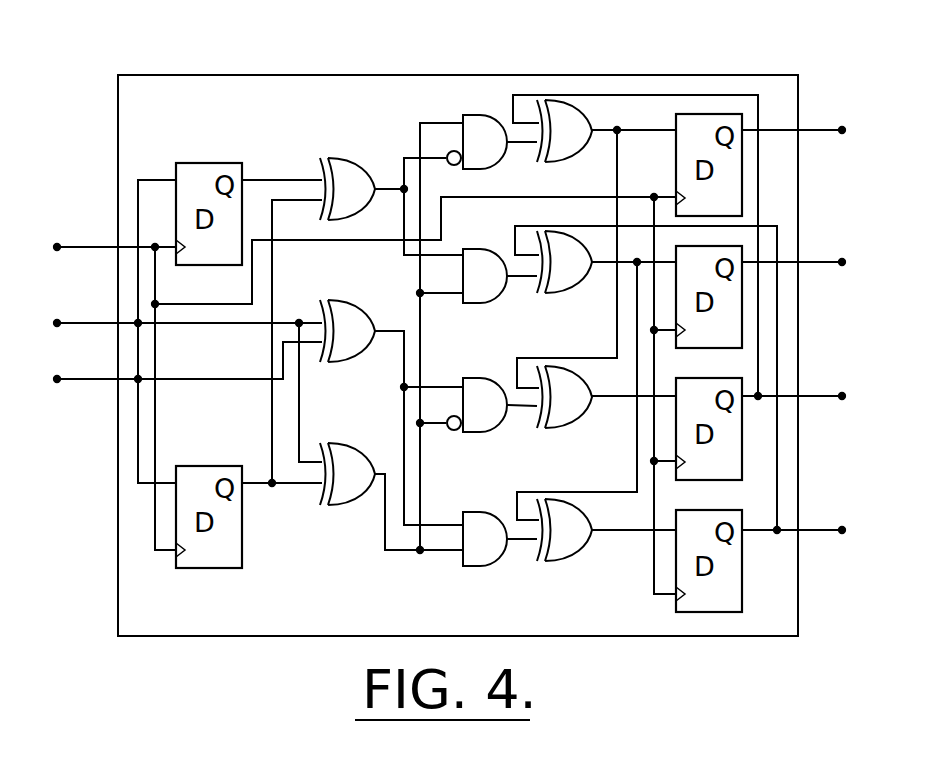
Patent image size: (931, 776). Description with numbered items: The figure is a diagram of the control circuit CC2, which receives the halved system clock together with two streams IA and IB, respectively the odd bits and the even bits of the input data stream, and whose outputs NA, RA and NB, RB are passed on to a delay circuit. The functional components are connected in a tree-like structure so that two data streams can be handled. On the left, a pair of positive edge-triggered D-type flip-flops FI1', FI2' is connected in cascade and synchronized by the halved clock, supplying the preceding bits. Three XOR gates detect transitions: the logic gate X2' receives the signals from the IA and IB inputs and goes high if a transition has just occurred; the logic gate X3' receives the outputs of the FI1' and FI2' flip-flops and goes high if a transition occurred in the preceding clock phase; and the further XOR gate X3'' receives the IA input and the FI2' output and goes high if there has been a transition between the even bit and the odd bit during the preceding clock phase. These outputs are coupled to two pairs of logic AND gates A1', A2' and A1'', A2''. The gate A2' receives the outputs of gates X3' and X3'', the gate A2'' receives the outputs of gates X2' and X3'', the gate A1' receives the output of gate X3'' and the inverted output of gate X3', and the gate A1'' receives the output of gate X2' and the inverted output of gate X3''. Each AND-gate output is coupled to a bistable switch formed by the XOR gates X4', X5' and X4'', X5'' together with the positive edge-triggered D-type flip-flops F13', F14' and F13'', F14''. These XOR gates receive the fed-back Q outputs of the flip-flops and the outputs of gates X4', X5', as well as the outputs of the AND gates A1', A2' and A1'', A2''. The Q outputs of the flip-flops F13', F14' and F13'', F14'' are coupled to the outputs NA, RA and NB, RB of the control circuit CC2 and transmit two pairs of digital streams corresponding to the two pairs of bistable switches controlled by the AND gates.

The control circuit CC2 is at (487, 374).
The odd-bit input stream IA is at (187, 321).
The even-bit input stream IB is at (187, 403).
The positive edge-triggered D-type flip-flop FI1' is at (225, 195).
The positive edge-triggered D-type flip-flop FI2' is at (249, 384).
The logic gate X3' is at (377, 189).
The logic gate X2' is at (377, 396).
The further XOR gate X3'' is at (383, 338).
The logic AND gate A1' is at (479, 126).
The logic AND gate A2' is at (503, 292).
The logic AND gate A1'' is at (481, 387).
The logic AND gate A2'' is at (507, 559).
The logic XOR gate X4' is at (637, 247).
The logic XOR gate X5' is at (648, 380).
The logic XOR gate X4'' is at (596, 291).
The logic XOR gate X5'' is at (596, 429).
The positive edge-triggered D-type flip-flop F13' is at (740, 135).
The positive edge-triggered D-type flip-flop F14' is at (779, 309).
The positive edge-triggered D-type flip-flop F13'' is at (783, 443).
The positive edge-triggered D-type flip-flop F14'' is at (689, 591).
The output NA is at (807, 149).
The output RA is at (806, 282).
The output NB is at (807, 415).
The output RB is at (807, 550).